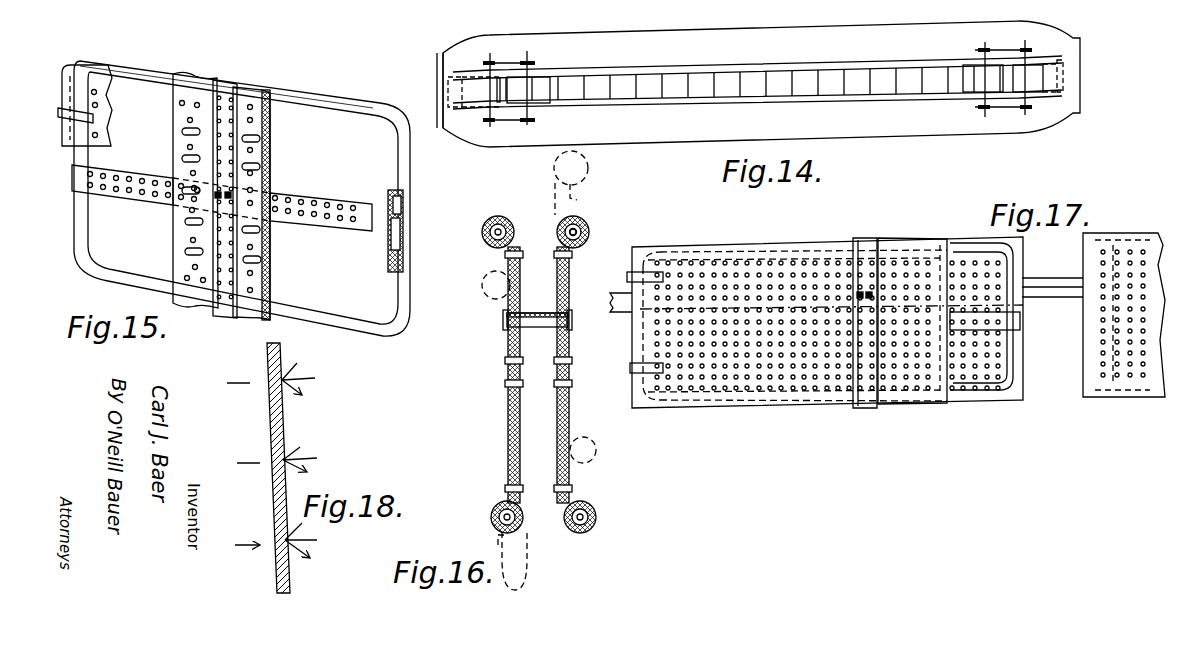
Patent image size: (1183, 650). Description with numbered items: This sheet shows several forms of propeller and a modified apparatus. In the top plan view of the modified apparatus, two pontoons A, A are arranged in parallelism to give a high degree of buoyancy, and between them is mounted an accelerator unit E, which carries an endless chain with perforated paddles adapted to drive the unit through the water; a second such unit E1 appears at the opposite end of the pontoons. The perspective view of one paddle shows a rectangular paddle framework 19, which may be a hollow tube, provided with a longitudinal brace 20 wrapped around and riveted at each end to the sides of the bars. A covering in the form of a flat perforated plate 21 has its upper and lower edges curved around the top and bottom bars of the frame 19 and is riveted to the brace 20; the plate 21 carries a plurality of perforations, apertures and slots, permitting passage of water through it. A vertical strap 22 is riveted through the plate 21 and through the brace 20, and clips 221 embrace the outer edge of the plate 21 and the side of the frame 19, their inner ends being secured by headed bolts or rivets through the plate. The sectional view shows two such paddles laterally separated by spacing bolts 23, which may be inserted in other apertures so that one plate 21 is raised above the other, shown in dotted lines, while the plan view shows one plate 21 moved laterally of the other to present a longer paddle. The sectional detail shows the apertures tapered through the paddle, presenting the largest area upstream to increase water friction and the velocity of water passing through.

In FIG. 15, the paddle framework 19 is at (323, 103).
In FIG. 16, the paddle framework 19 is at (561, 231).
In FIG. 17, the paddle framework 19 is at (965, 247).
In FIG. 15, the longitudinal brace 20 is at (323, 206).
In FIG. 17, the longitudinal brace 20 is at (970, 322).
In FIG. 15, the flat perforated plate 21 is at (258, 166).
In FIG. 16, the flat perforated plate 21 is at (583, 236).
In FIG. 17, the flat perforated plate 21 is at (800, 280).
In FIG. 15, the vertical strap 22 is at (228, 87).
In FIG. 16, the vertical strap 22 is at (578, 226).
In FIG. 17, the vertical strap 22 is at (865, 243).
In FIG. 15, the spacing bolts 23 is at (232, 195).
In FIG. 16, the spacing bolts 23 is at (537, 329).
In FIG. 17, the spacing bolts 23 is at (880, 284).
In FIG. 15, the clips 221 is at (65, 117).
In FIG. 17, the clips 221 is at (618, 267).
In FIG. 14, the pontoons A is at (758, 84).
In FIG. 14, the accelerator unit E is at (465, 88).
In FIG. 14, the end bracket E' E1 is at (1060, 77).